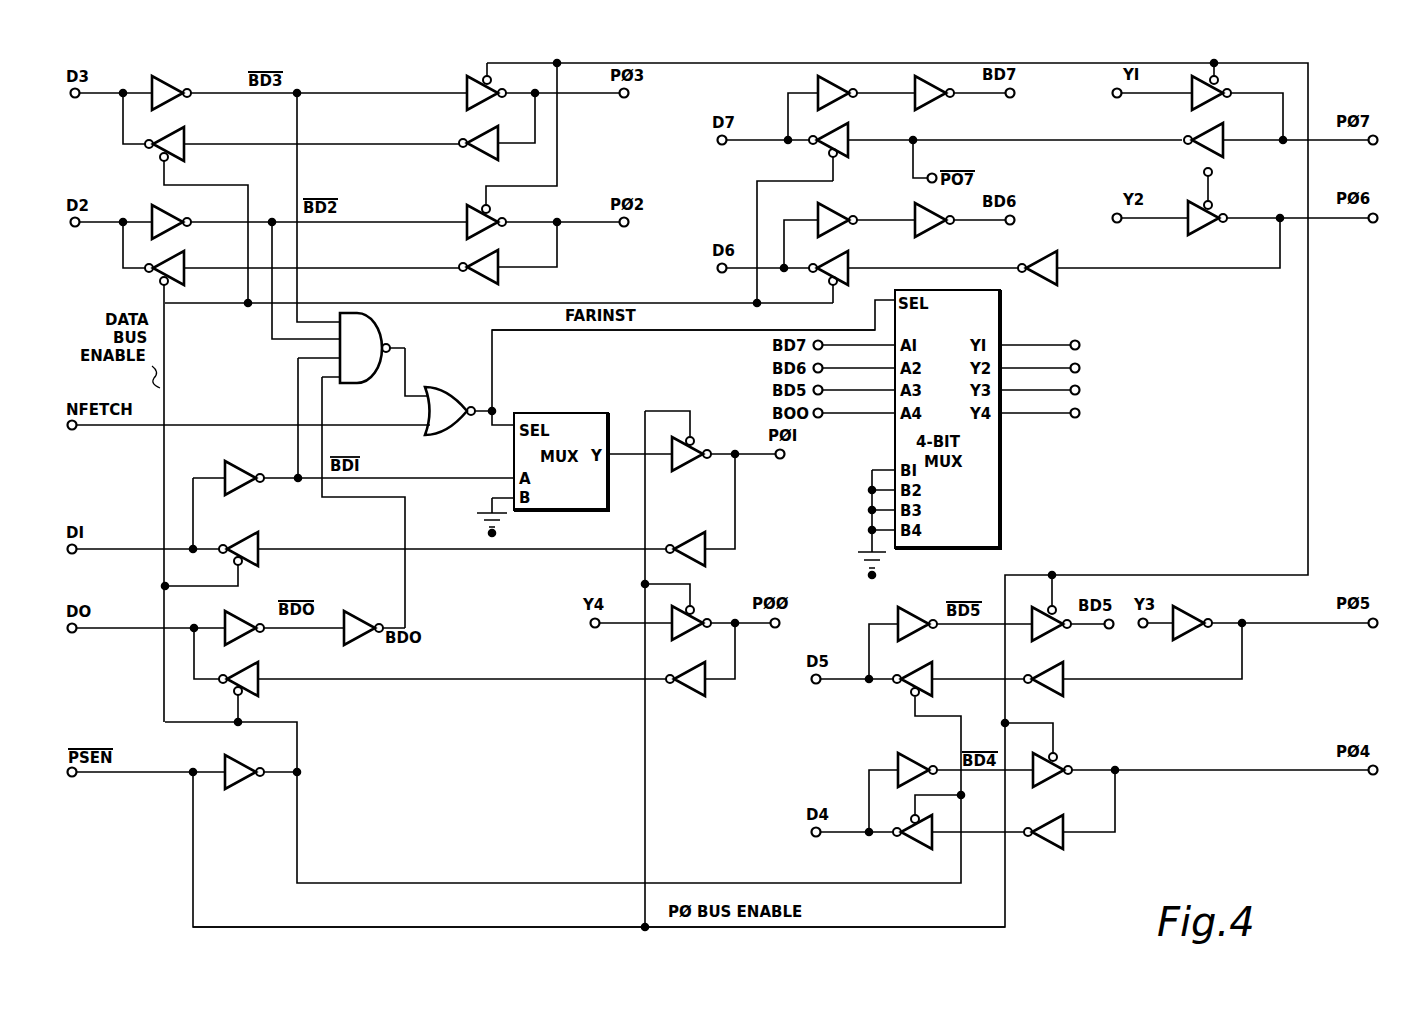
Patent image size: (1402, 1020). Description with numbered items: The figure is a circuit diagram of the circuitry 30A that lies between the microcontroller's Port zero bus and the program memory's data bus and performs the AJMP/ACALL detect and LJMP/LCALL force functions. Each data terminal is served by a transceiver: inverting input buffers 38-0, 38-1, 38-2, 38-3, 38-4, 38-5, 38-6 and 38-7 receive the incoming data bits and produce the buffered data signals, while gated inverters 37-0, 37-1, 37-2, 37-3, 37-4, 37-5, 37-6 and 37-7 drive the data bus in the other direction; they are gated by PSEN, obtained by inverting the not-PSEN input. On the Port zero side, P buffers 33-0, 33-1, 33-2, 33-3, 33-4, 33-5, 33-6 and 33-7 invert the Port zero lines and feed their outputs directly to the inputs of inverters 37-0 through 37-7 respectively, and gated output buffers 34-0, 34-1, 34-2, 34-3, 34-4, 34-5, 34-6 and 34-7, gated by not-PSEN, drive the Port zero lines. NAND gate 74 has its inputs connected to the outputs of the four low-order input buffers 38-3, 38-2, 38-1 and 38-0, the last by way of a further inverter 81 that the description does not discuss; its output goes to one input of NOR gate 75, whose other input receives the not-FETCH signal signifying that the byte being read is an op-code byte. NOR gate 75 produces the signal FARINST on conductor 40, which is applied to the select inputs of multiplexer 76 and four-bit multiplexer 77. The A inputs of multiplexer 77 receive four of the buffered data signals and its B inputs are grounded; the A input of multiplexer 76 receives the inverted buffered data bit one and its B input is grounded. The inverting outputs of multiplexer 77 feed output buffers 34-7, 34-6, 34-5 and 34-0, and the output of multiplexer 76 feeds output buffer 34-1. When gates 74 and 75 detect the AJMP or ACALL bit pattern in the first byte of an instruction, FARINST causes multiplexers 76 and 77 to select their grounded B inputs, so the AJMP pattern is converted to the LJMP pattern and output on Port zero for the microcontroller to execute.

The circuitry 30A is at (548, 912).
The P buffer inverter 33-0 is at (710, 685).
The inverter 33-1 is at (688, 535).
The inverter 33-2 is at (451, 261).
The inverter 33-3 is at (453, 137).
The inverter 33-4 is at (1060, 816).
The inverter 33-5 is at (1065, 666).
The inverter 33-6 is at (1019, 259).
The inverter 33-7 is at (1225, 129).
The gated inverter 34-0 is at (709, 611).
The gated inverter 34-1 is at (709, 446).
The gated inverter 34-2 is at (457, 209).
The gated inverter 34-3 is at (459, 83).
The gated inverter 34-4 is at (1071, 756).
The gated inverter 34-5 is at (1201, 610).
The gated inverter 34-6 is at (1229, 205).
The gated inverter 34-7 is at (1234, 89).
The gated inverter 37-0 is at (260, 666).
The gated inverter 37-1 is at (260, 536).
The gated inverter 37-2 is at (188, 257).
The gated inverter 37-3 is at (188, 132).
The gated inverter 37-4 is at (905, 845).
The gated inverter 37-5 is at (936, 666).
The gated inverter 37-6 is at (853, 257).
The gated inverter 37-7 is at (853, 129).
The inverting input buffer 38-0 is at (251, 617).
The inverting input buffer 38-1 is at (249, 467).
The inverting input buffer 38-2 is at (185, 211).
The inverting input buffer 38-3 is at (182, 82).
The inverting input buffer 38-4 is at (916, 757).
The inverting input buffer 38-5 is at (911, 611).
The inverting input buffer 38-6 is at (852, 208).
The inverting input buffer 38-7 is at (854, 82).
The conductor 40 is at (662, 320).
The NAND gate 74 is at (373, 348).
The NOR gate 75 is at (450, 398).
The multiplexer 76 is at (561, 447).
The multiplexer 77 is at (964, 419).
The inverter 81 is at (363, 616).